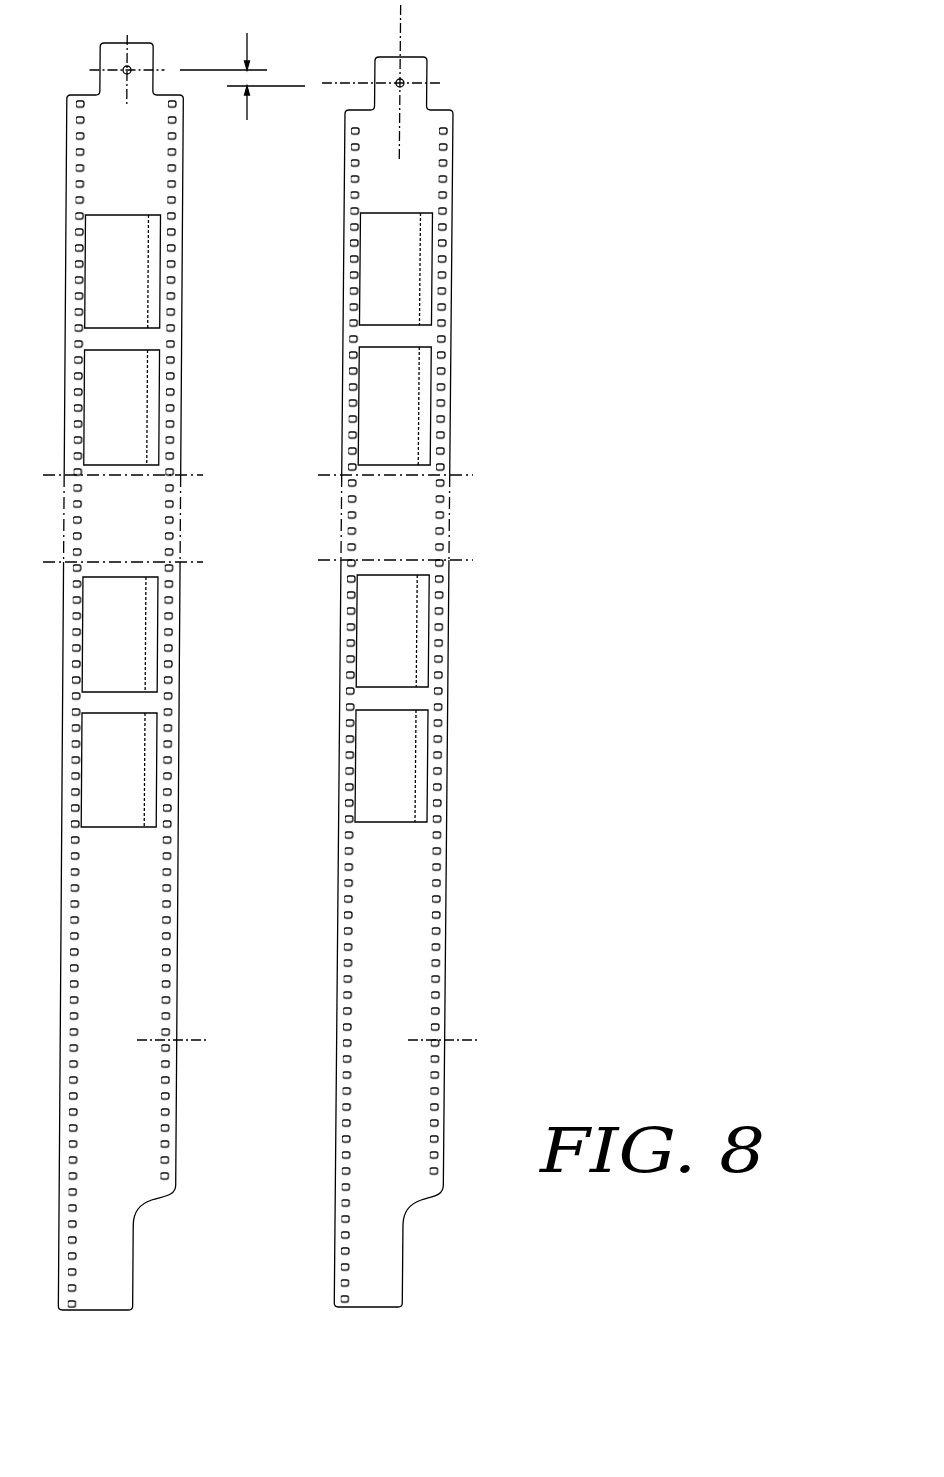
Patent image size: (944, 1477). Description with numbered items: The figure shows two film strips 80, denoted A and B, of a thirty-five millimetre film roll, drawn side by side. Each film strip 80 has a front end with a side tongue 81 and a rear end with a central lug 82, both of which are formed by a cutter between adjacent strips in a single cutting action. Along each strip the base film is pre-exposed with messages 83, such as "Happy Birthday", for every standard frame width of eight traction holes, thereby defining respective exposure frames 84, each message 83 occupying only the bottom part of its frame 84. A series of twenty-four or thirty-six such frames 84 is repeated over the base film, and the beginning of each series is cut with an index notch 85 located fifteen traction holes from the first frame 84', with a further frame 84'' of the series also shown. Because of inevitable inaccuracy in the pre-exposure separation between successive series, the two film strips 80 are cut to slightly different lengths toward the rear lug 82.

The film strip 80 is at (181, 1216).
The side tongue 81 is at (102, 1302).
The central lug 82 is at (150, 50).
The message 83 is at (160, 627).
The exposure frame 84 is at (255, 633).
The first frame 84' is at (254, 768).
The exposure frame 84'' is at (259, 270).
The index notch 85 is at (172, 1040).